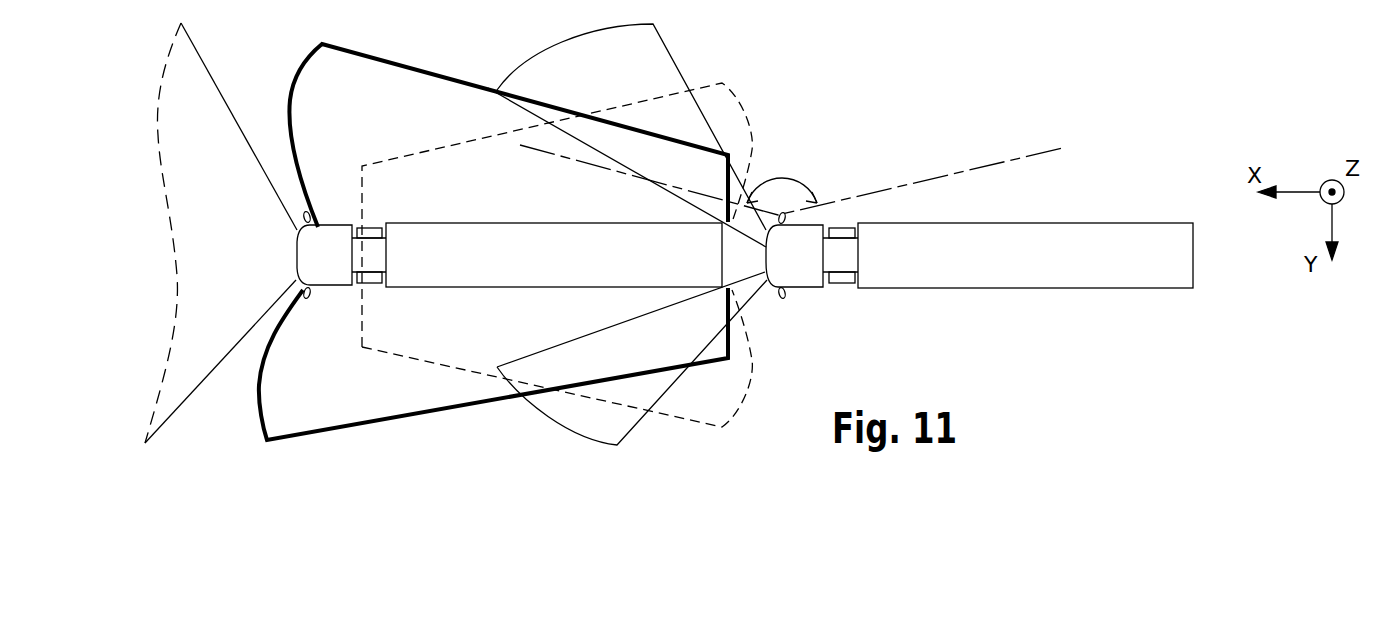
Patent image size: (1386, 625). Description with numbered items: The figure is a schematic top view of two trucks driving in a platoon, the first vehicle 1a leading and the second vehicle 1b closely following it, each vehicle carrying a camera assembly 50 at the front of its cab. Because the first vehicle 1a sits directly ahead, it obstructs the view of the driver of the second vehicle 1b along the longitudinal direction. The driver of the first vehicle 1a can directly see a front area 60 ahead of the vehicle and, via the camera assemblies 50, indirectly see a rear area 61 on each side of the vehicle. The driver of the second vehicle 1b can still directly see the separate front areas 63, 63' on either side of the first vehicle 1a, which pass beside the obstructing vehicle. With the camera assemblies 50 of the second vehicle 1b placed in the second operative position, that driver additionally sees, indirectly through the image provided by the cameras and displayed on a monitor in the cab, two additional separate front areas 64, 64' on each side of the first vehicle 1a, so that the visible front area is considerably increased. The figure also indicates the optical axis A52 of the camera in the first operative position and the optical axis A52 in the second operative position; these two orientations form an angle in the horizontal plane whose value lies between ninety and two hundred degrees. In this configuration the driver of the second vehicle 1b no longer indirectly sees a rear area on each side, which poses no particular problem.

The first vehicle 1a is at (552, 268).
The second vehicle 1b is at (1040, 268).
The camera assembly 50 is at (780, 294).
The front area 60 is at (245, 270).
The rear area 61 is at (747, 107).
The separate front area 63 is at (627, 129).
The separate front area 63' is at (632, 368).
The additional separate front area 64 is at (508, 115).
The additional separate front area 64' is at (493, 378).
The optical axis A52 is at (530, 150).